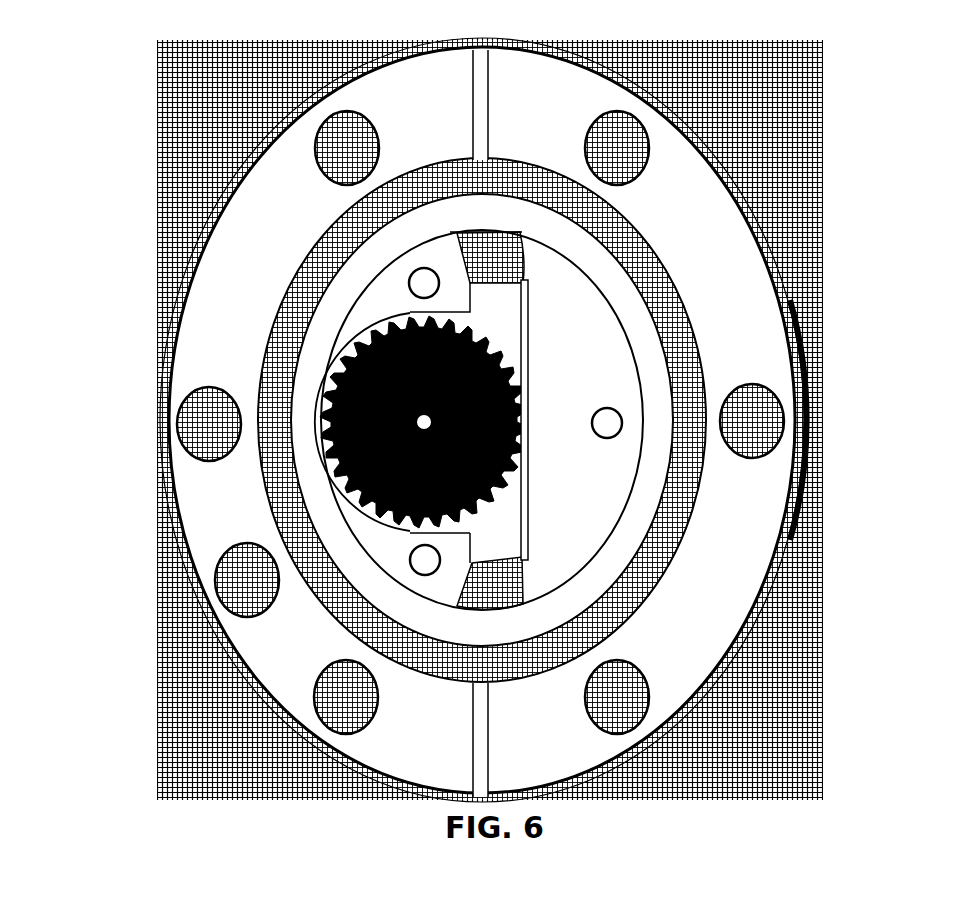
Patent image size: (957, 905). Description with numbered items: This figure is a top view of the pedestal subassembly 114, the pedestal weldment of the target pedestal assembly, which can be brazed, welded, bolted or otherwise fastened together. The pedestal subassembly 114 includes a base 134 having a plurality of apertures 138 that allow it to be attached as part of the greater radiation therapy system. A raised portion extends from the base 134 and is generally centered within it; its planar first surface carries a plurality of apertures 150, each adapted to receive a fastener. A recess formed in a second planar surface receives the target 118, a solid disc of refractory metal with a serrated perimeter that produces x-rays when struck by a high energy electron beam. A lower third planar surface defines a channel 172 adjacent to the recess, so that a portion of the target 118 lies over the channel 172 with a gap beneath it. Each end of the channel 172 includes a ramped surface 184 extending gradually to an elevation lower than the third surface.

The pedestal subassembly 114 is at (766, 166).
The target 118 is at (350, 458).
The base 134 is at (737, 560).
The apertures 138 is at (752, 446).
The apertures 150 is at (607, 440).
The channel 172 is at (505, 338).
The ramped surface 184 is at (497, 258).